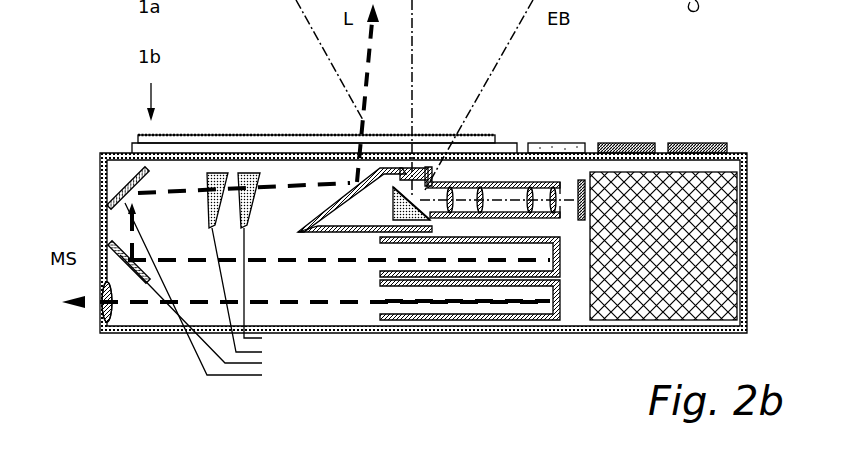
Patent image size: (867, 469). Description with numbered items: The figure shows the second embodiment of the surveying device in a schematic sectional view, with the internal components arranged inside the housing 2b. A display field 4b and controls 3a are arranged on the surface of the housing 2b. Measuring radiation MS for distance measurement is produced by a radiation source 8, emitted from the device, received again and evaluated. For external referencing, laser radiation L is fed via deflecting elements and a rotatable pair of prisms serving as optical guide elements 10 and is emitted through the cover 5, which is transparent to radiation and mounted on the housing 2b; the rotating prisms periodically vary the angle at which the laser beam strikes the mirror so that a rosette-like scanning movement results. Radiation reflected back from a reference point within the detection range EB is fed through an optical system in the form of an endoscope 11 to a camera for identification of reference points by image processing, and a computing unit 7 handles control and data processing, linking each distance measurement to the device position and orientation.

The optical guide elements 10 is at (375, 357).
The cover 5 is at (305, 135).
The display field 4b is at (572, 143).
The light source 3a is at (712, 145).
The endoscope 11 is at (440, 170).
The radiation source 8 is at (510, 272).
The housing 2b is at (472, 357).
The detector block 7 is at (633, 305).